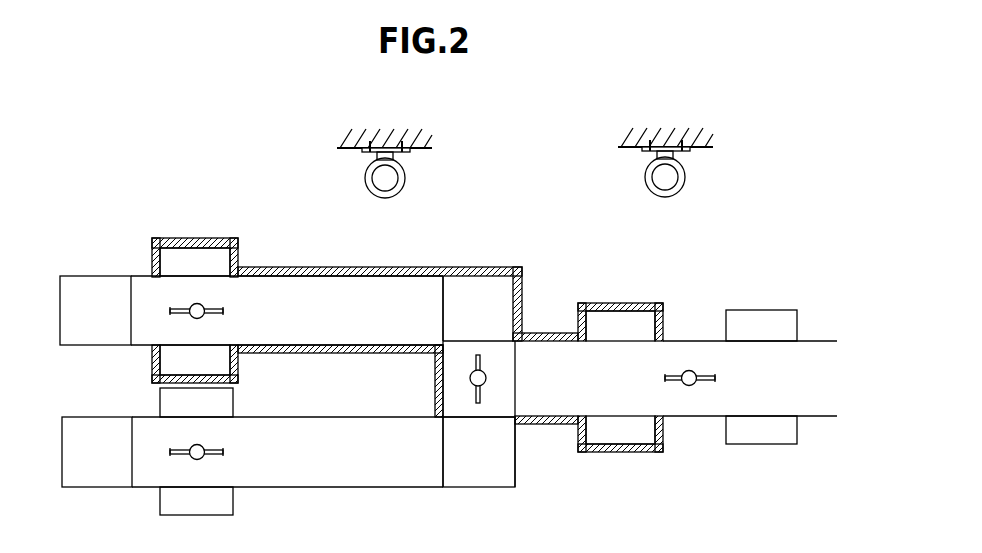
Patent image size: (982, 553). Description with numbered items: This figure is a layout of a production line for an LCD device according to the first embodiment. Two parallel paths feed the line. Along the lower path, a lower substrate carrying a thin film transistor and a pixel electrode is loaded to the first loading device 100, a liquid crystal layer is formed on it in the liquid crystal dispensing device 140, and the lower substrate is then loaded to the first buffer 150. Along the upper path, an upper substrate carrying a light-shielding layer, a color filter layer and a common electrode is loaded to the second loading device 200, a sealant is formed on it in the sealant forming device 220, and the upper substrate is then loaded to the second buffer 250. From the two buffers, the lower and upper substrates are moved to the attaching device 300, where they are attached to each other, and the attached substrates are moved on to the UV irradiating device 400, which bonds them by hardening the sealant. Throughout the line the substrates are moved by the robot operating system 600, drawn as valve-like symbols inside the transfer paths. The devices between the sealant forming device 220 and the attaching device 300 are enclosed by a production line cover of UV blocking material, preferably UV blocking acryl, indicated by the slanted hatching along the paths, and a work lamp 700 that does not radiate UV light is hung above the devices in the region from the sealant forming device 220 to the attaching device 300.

The first loading device 100 is at (97, 452).
The liquid crystal dispensing device 140 is at (196, 452).
The first buffer 150 is at (479, 452).
The second loading device 200 is at (95, 310).
The sealant forming device 220 is at (195, 310).
The second buffer 250 is at (472, 308).
The attaching device 300 is at (620, 377).
The UV irradiating device 400 is at (761, 378).
The robot operating system 600 is at (219, 309).
The work lamp 700 is at (424, 179).